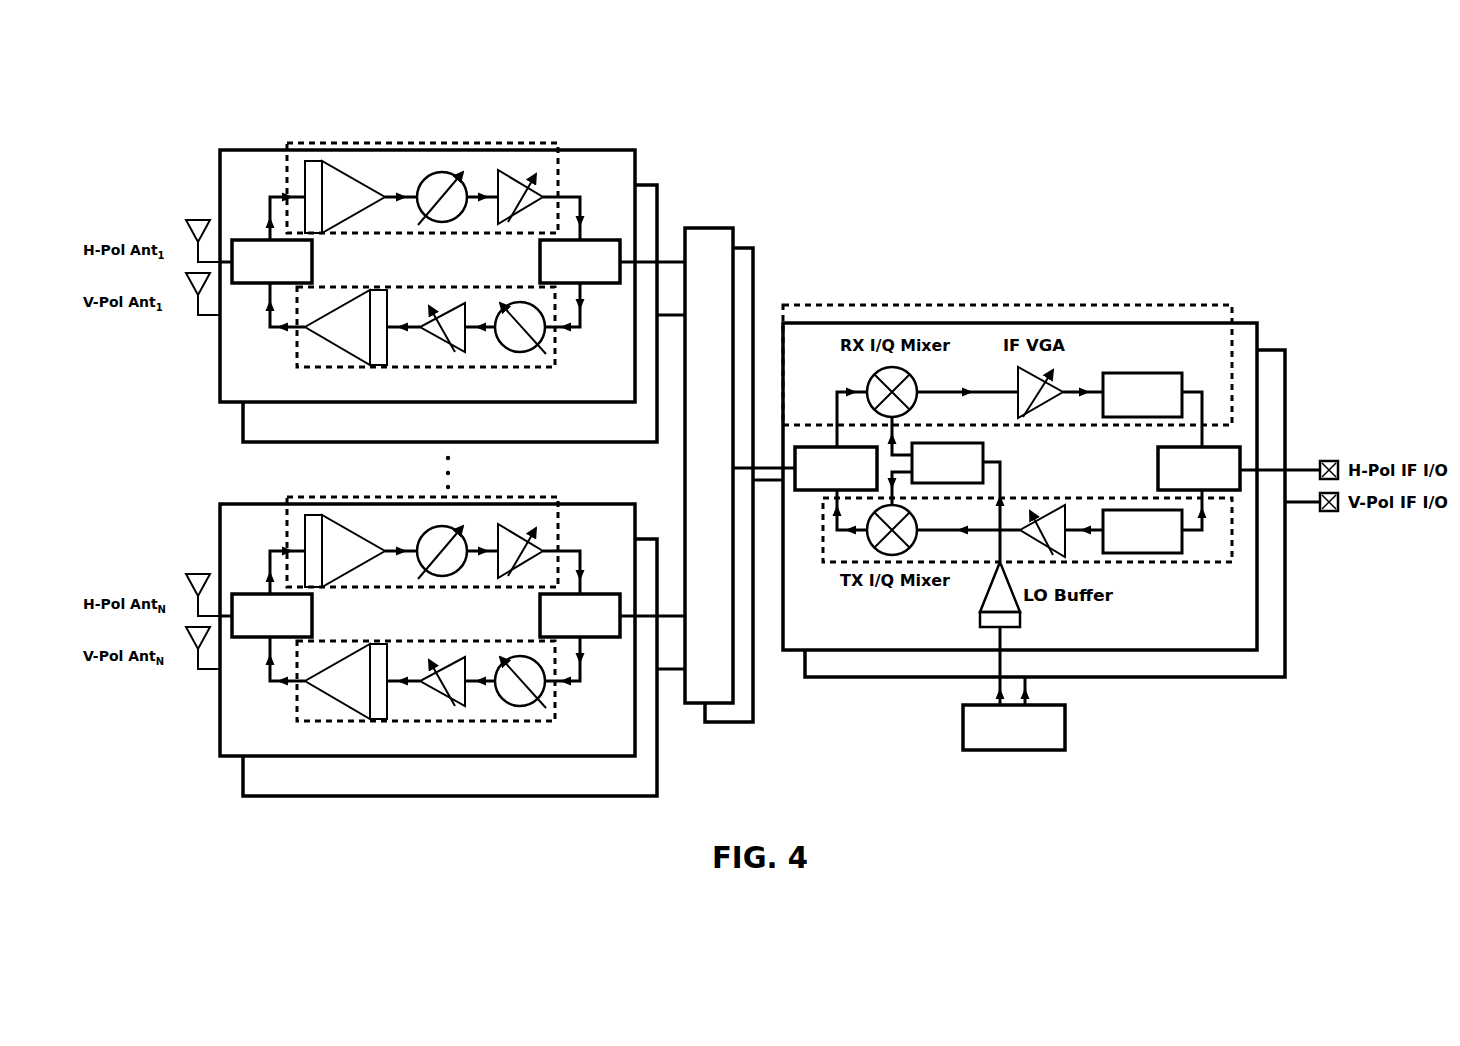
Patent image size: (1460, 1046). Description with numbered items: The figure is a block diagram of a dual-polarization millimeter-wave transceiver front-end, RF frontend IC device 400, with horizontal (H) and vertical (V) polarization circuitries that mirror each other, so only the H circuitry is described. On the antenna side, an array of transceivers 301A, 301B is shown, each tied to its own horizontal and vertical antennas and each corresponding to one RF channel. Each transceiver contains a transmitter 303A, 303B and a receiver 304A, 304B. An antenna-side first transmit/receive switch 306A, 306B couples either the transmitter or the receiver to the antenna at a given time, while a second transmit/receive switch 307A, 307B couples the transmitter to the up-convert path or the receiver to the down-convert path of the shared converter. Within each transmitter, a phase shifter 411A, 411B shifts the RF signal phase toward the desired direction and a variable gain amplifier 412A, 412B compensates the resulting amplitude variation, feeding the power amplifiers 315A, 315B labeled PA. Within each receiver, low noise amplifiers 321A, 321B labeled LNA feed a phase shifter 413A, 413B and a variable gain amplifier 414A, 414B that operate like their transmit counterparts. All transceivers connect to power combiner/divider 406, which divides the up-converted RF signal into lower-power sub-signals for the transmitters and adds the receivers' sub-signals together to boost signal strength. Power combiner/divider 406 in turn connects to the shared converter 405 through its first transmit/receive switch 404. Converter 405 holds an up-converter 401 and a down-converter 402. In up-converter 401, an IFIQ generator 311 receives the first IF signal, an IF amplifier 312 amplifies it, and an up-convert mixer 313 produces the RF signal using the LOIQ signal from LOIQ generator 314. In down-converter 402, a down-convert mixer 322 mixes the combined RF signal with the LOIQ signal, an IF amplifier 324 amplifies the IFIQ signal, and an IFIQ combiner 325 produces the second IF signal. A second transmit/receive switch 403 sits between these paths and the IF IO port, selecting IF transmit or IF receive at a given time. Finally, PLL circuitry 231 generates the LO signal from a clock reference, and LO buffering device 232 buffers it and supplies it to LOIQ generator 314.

The RF frontend IC device 400 is at (1107, 70).
The transceiver 301A is at (636, 151).
The transceiver 301B is at (476, 650).
The transmitter 303A is at (286, 341).
The transmitter 303B is at (352, 686).
The receiver 304A is at (463, 141).
The receiver 304B is at (427, 514).
The first transmit/receive switch 306A is at (250, 240).
The first transmit/receive switch 306B is at (228, 582).
The second transmit/receive switch 307A is at (540, 262).
The second transmit/receive switch 307B is at (533, 611).
The power amplifier 315A is at (340, 312).
The power amplifier 315B is at (351, 664).
The low noise amplifier 321A is at (308, 172).
The low noise amplifier 321B is at (307, 528).
The phase shifter 411A is at (546, 336).
The phase shifter 411B is at (559, 687).
The variable gain amplifier 412A is at (450, 312).
The variable gain amplifier 412B is at (465, 660).
The phase shifter 413A is at (437, 173).
The phase shifter 413B is at (413, 525).
The variable gain amplifier 414A is at (516, 170).
The variable gain amplifier 414B is at (541, 522).
The power combiner/divider 406 is at (733, 229).
The converter 405 is at (1257, 323).
The down-converter 402 is at (1088, 300).
The up-converter 401 is at (1122, 567).
The transmit/receive switch 404 is at (823, 491).
The transmit/receive switch 403 is at (1158, 465).
The down-convert mixer 322 is at (875, 388).
The IF amplifier 324 is at (1018, 380).
The IFIQ combiner 325 is at (1170, 373).
The LOIQ generator 314 is at (983, 452).
The IF amplifier 312 is at (1058, 503).
The up-convert mixer 313 is at (917, 538).
The IFIQ generator 311 is at (1160, 553).
The LO buffering device 232 is at (1022, 616).
The PLL circuitry 231 is at (1065, 727).